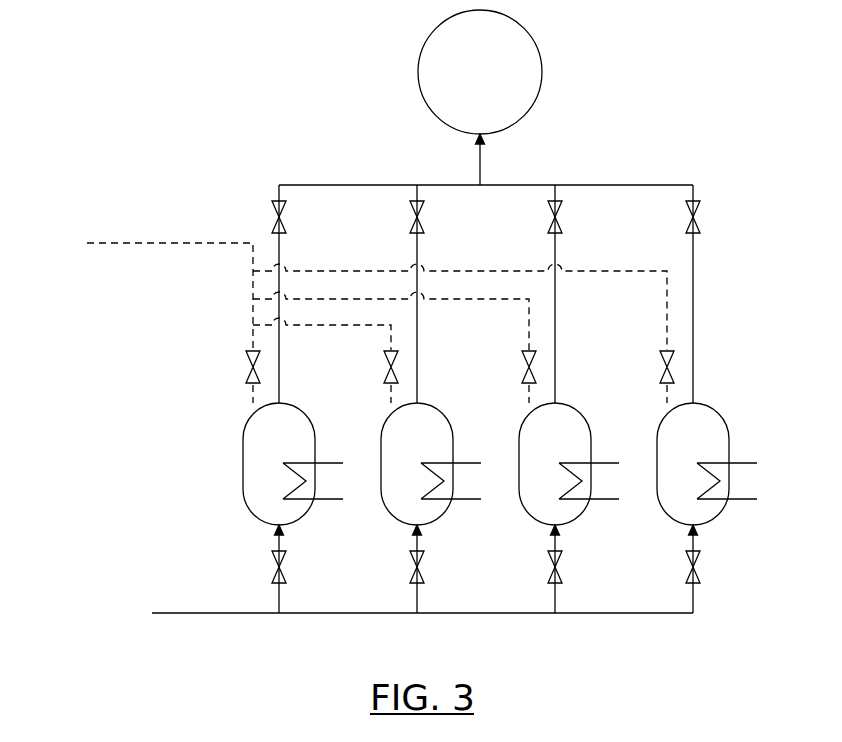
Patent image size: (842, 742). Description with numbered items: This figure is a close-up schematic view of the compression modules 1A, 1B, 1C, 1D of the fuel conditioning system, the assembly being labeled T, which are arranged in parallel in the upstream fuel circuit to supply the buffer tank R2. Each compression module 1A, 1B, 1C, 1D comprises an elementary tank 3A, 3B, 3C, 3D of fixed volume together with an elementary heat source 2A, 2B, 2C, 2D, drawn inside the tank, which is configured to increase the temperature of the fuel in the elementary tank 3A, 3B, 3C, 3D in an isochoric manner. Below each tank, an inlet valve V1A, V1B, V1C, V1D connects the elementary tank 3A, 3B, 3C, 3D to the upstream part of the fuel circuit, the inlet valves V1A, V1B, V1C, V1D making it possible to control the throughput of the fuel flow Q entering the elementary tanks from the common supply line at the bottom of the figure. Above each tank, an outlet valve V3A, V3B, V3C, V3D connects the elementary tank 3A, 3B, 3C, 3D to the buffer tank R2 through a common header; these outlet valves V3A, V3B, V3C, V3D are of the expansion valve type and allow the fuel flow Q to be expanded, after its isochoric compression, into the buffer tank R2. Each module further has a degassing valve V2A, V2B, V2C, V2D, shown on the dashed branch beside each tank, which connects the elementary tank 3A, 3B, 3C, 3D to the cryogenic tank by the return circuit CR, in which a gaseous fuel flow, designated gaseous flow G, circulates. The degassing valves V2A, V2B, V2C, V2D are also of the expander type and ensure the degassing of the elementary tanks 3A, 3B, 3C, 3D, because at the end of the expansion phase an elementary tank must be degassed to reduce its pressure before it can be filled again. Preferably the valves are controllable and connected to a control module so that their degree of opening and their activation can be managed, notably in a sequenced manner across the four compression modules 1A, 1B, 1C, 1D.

The thermal storage system T is at (314, 147).
The buffer tank R2 is at (480, 72).
The fuel flow Q is at (400, 380).
The return circuit CR is at (147, 291).
The gaseous flow G is at (409, 282).
The compression module 1A is at (294, 441).
The compression module 1B is at (432, 441).
The compression module 1C is at (570, 441).
The compression module 1D is at (708, 441).
The elementary heat source 2A is at (320, 481).
The elementary heat source 2B is at (458, 481).
The elementary heat source 2C is at (596, 481).
The elementary heat source 2D is at (735, 481).
The elementary tank 3A is at (243, 465).
The elementary tank 3B is at (381, 465).
The elementary tank 3C is at (519, 465).
The elementary tank 3D is at (657, 465).
The inlet valve V1A is at (300, 569).
The inlet valve V1B is at (438, 569).
The inlet valve V1C is at (576, 569).
The inlet valve V1D is at (715, 569).
The degassing valve V2A is at (234, 377).
The degassing valve V2B is at (372, 377).
The degassing valve V2C is at (510, 377).
The degassing valve V2D is at (648, 377).
The outlet valve V3A is at (299, 294).
The outlet valve V3B is at (437, 294).
The outlet valve V3C is at (575, 294).
The outlet valve V3D is at (714, 294).